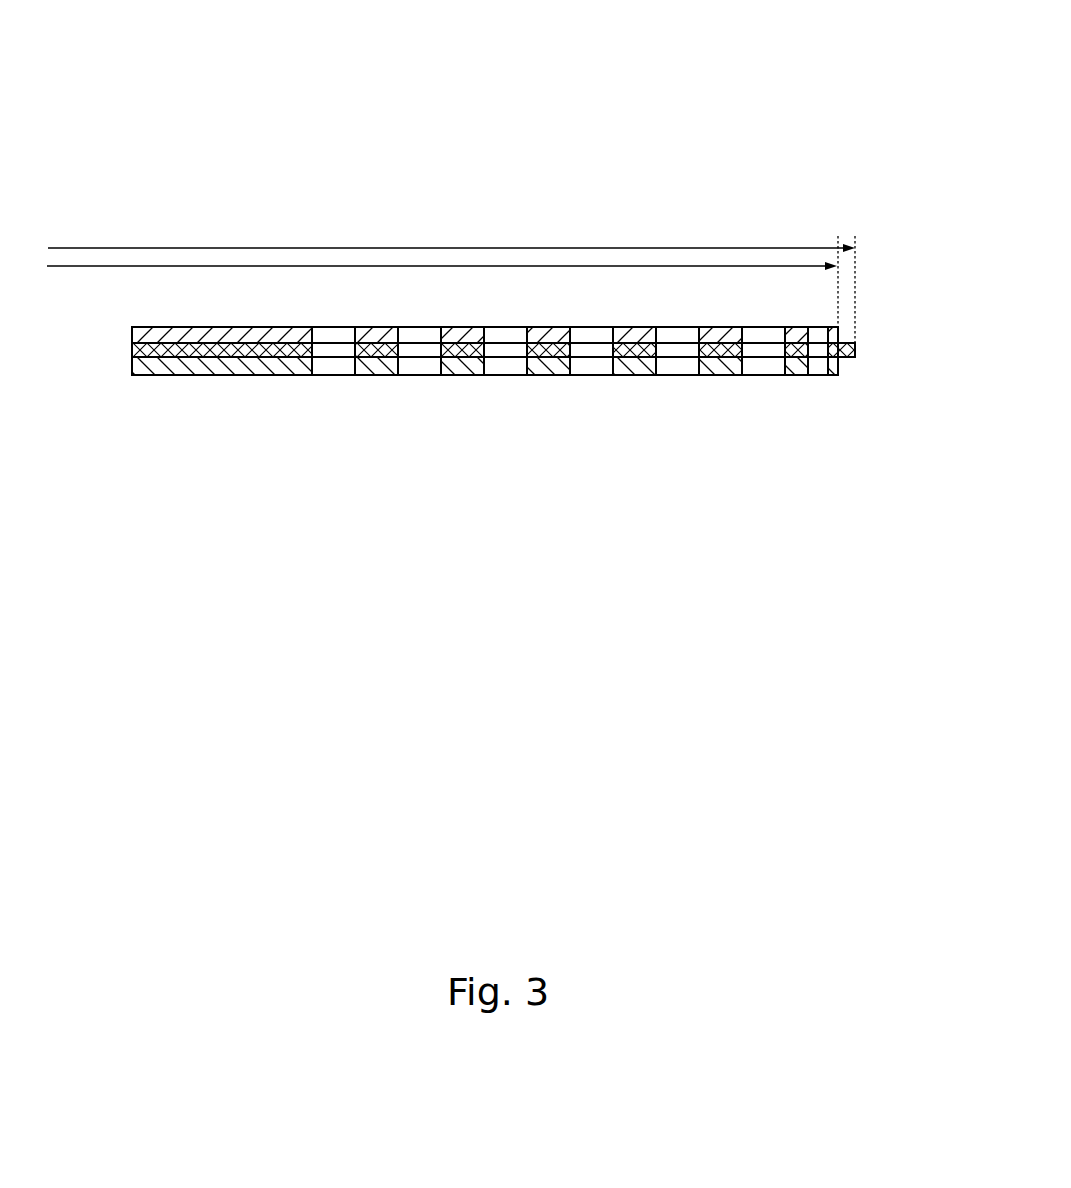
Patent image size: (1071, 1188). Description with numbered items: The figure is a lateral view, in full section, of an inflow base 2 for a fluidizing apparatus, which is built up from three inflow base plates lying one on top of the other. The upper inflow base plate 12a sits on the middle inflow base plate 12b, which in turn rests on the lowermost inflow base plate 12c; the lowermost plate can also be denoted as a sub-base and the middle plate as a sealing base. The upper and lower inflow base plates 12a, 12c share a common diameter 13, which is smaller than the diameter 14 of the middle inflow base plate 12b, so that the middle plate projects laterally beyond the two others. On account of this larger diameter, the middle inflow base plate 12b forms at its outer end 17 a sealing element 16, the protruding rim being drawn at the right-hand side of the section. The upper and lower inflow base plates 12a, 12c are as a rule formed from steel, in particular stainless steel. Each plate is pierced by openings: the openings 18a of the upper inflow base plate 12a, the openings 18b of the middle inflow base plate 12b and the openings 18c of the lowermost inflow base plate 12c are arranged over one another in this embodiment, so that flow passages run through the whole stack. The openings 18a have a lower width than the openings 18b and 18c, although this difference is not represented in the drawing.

The inflow base 2 is at (205, 77).
The upper inflow base plate 12a is at (133, 338).
The middle inflow base plate 12b is at (132, 349).
The lowermost inflow base plate 12c is at (148, 365).
The diameter of the upper and lower inflow base plates 13 is at (442, 276).
The diameter of the middle inflow base plate 14 is at (451, 239).
The sealing element 16 is at (856, 357).
The outer end of the middle inflow base plate 17 is at (856, 343).
The openings of the upper inflow base plate 18a is at (505, 335).
The openings of the middle inflow base plate 18b is at (592, 350).
The openings of the lowermost inflow base plate 18c is at (818, 365).